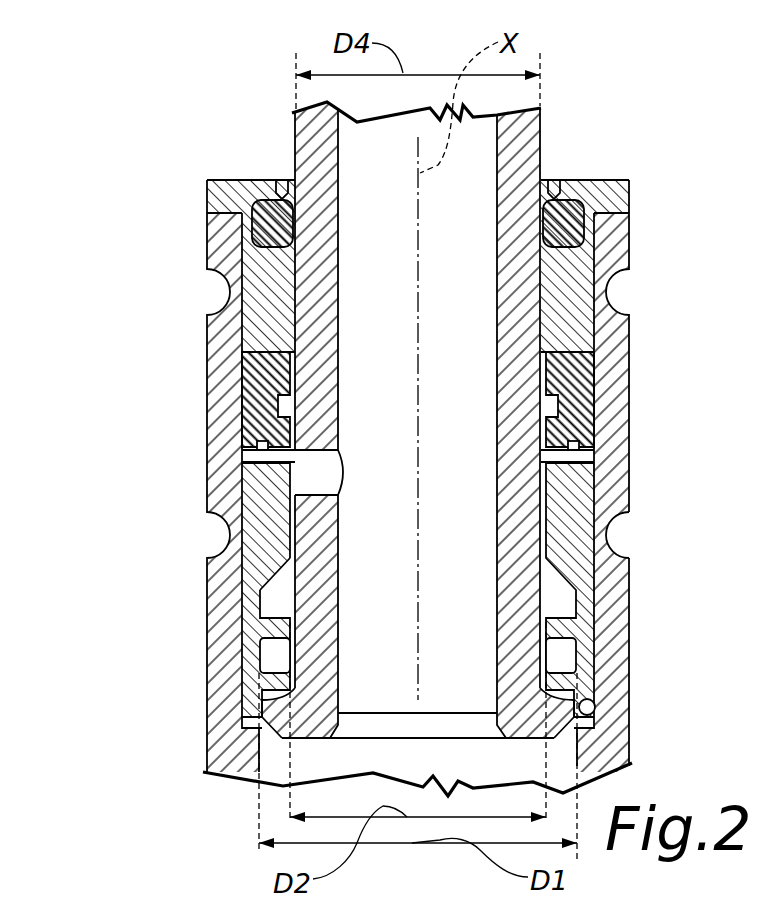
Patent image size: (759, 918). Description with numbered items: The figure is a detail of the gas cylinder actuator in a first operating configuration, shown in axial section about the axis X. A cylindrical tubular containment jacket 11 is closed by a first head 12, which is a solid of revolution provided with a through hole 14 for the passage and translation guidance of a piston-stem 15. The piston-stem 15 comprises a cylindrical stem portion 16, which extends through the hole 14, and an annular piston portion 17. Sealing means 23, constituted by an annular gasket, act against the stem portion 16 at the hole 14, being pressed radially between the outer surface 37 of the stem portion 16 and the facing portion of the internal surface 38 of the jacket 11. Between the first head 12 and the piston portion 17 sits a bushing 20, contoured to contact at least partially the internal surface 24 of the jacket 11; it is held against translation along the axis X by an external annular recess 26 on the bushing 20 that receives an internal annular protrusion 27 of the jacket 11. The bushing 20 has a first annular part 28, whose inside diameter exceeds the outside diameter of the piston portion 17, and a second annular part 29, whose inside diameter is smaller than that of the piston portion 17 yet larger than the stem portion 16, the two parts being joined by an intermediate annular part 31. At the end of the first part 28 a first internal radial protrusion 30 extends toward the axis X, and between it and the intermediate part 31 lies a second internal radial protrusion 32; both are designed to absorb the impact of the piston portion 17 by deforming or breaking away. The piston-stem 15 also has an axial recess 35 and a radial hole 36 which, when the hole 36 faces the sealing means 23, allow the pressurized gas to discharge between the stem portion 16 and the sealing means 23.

The tubular containment jacket 11 is at (617, 368).
The first head 12 is at (636, 178).
The through hole 14 is at (293, 293).
The piston-stem 15 is at (550, 110).
The stem portion 16 is at (303, 148).
The piston portion 17 is at (297, 726).
The bushing 20 is at (230, 590).
The sealing means 23 is at (290, 382).
The internal surface 24 is at (595, 700).
The external annular recess 26 is at (583, 492).
The internal annular protrusion 27 is at (604, 536).
The first annular part 28 is at (247, 657).
The second annular part 29 is at (275, 485).
The first internal radial protrusion 30 is at (267, 685).
The intermediate annular part 31 is at (262, 570).
The second internal radial protrusion 32 is at (557, 627).
The axial recess 35 is at (437, 272).
The radial hole 36 is at (333, 478).
The outer surface 37 is at (283, 352).
The internal surface 38 is at (280, 456).